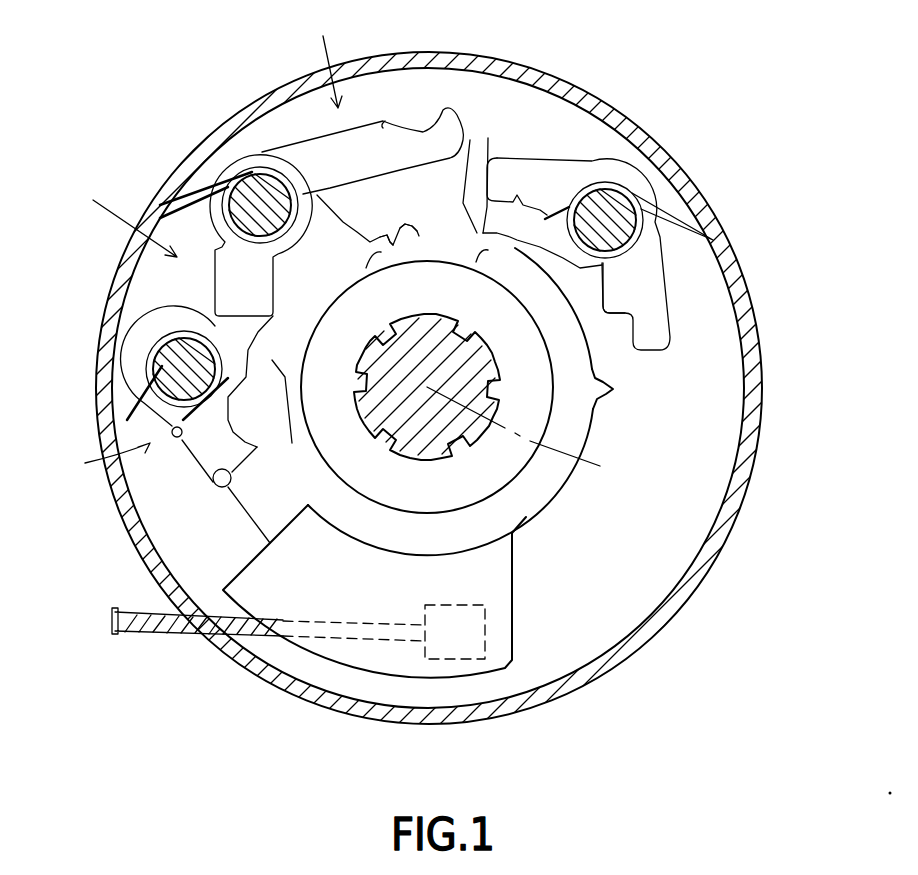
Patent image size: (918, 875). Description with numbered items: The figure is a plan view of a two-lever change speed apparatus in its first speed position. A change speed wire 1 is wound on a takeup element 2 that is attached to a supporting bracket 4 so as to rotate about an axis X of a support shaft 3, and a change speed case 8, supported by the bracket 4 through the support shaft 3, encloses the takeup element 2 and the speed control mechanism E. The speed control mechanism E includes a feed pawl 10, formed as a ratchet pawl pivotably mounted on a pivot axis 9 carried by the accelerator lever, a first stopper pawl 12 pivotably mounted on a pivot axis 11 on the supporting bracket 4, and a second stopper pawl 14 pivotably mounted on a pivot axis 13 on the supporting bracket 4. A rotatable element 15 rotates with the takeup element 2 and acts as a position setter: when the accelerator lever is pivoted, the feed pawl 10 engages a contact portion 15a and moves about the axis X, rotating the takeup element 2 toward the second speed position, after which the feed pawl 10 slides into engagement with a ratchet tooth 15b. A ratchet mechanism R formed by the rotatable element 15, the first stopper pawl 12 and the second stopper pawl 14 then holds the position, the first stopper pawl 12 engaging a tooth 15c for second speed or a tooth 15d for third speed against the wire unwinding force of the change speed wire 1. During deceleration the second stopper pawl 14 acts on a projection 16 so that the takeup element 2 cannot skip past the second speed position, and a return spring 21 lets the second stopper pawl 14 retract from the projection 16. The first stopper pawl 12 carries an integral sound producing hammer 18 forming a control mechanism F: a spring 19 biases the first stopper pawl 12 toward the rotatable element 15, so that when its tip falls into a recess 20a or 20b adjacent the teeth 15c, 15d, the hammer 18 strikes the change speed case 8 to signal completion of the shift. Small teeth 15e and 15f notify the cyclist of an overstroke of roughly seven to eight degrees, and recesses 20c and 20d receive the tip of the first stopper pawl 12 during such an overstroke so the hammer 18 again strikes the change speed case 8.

The change speed wire 1 is at (147, 633).
The takeup element 2 is at (502, 635).
The support shaft 3 is at (415, 447).
The supporting bracket 4 is at (638, 606).
The change speed case 8 is at (445, 53).
The pivot axis 9 is at (172, 367).
The feed pawl 10 is at (193, 460).
The pivot axis 11 is at (255, 193).
The first stopper pawl 12 is at (224, 295).
The pivot axis 13 is at (612, 212).
The second stopper pawl 14 is at (577, 165).
The rotatable element 15 is at (426, 377).
The contact portion 15a is at (212, 493).
The ratchet tooth 15b is at (275, 403).
The tooth 15c is at (332, 188).
The tooth 15d is at (463, 200).
The small tooth 15e is at (377, 267).
The small tooth 15f is at (482, 250).
The projection 16 is at (606, 401).
The sound producing hammer 18 is at (385, 125).
The spring 19 is at (180, 193).
The recess 20a is at (463, 202).
The recess 20b is at (513, 197).
The recess 20c is at (418, 236).
The recess 20d is at (574, 267).
The return spring 21 is at (695, 222).
The speed control mechanism E is at (106, 466).
The control mechanism F is at (327, 54).
The ratchet mechanism R is at (121, 216).
The axis X is at (518, 442).